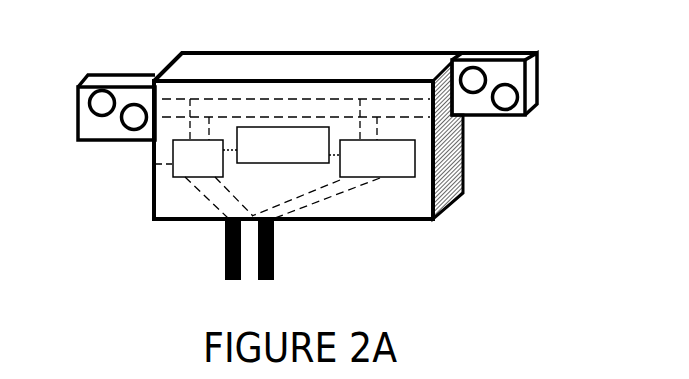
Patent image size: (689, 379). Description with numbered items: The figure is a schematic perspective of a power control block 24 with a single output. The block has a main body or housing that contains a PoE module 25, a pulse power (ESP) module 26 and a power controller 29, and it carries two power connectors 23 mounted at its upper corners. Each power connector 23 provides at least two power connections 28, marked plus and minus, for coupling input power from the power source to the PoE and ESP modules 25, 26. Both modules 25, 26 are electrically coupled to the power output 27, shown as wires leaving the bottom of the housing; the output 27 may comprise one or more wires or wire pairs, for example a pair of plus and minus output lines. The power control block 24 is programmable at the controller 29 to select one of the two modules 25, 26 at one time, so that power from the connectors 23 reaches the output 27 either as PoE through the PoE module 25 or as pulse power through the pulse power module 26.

The power connector 23 is at (110, 76).
The power control block 24 is at (327, 53).
The PoE module 25 is at (144, 163).
The pulse power module 26 is at (387, 178).
The power output 27 is at (258, 251).
The power connection 28 is at (126, 130).
The power controller 29 is at (297, 163).